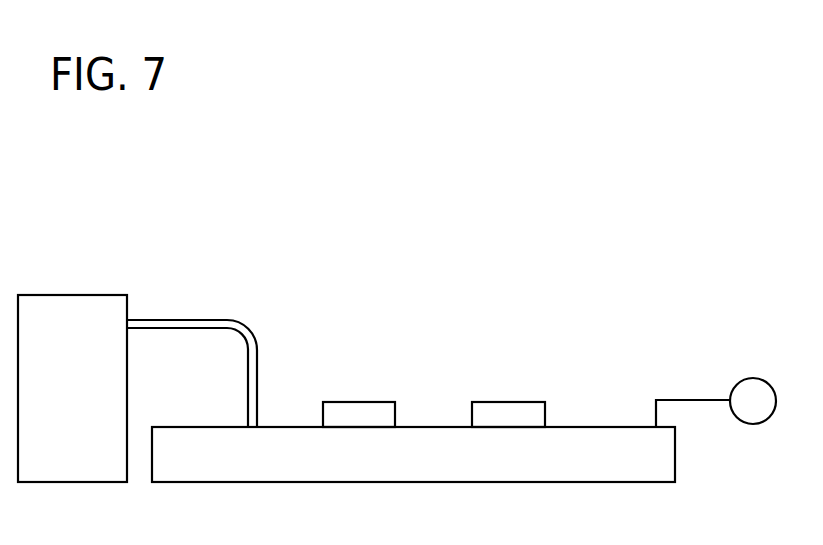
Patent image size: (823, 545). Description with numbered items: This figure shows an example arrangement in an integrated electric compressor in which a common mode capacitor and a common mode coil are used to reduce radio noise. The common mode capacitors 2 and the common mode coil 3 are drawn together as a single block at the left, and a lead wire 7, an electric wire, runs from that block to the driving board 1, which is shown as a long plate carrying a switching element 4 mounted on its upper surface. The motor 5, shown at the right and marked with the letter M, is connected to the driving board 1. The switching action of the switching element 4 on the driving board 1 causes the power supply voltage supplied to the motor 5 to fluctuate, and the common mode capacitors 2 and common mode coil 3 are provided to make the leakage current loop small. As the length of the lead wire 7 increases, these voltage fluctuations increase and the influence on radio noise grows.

The driving board 1 is at (587, 427).
The common mode capacitors 2 is at (79, 359).
The common mode coil 3 is at (102, 295).
The switching element 4 is at (473, 401).
The motor 5 is at (751, 378).
The lead wire 7 is at (227, 320).